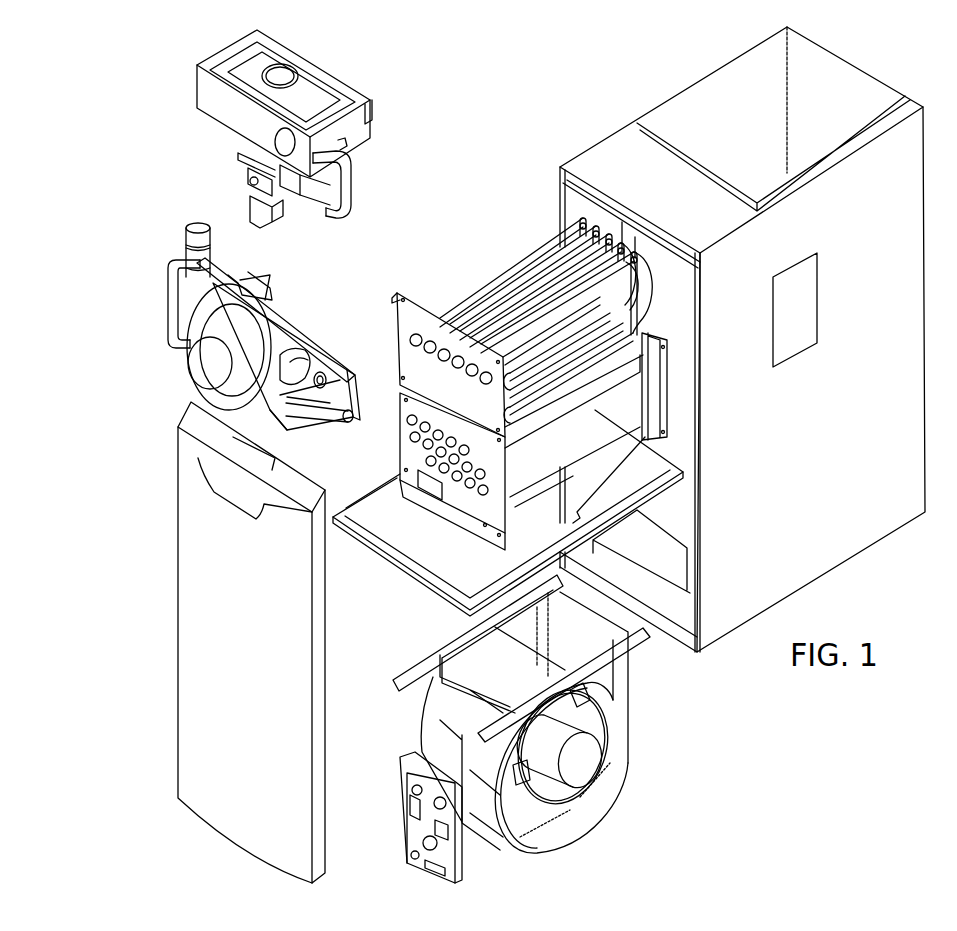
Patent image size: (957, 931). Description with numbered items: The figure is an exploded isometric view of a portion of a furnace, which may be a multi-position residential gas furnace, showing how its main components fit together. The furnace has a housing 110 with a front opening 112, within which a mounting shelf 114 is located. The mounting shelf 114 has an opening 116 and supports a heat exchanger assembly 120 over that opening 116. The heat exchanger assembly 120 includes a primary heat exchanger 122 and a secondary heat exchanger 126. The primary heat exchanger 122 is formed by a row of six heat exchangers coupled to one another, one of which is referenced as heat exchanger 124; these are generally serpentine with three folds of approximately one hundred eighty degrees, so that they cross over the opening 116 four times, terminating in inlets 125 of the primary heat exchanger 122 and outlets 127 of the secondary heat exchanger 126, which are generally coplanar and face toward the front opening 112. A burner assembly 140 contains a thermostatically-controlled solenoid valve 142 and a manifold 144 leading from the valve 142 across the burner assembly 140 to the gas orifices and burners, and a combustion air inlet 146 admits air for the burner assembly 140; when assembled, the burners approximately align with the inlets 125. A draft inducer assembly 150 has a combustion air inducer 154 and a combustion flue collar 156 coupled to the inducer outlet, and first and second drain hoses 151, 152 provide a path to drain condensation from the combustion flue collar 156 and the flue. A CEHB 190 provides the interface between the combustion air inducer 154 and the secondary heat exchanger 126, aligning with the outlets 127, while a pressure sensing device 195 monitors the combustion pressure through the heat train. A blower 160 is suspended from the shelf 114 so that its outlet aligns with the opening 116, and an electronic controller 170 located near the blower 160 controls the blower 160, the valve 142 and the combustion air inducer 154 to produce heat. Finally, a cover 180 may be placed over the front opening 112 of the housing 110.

The housing 110 is at (843, 446).
The front opening 112 is at (580, 207).
The mounting shelf 114 is at (400, 568).
The opening 116 is at (576, 496).
The heat exchanger assembly 120 is at (628, 397).
The primary heat exchanger 122 is at (522, 391).
The heat exchanger 124 is at (513, 260).
The inlets 125 is at (418, 307).
The secondary heat exchanger 126 is at (547, 480).
The outlets 127 is at (473, 483).
The burner assembly 140 is at (283, 103).
The thermostatically-controlled solenoid valve 142 is at (250, 177).
The manifold 144 is at (346, 194).
The combustion air inlet 146 is at (216, 64).
The draft inducer assembly 150 is at (247, 348).
The first drain hose 151 is at (168, 300).
The second drain hose 152 is at (318, 424).
The combustion air inducer 154 is at (208, 367).
The combustion flue collar 156 is at (184, 232).
The blower 160 is at (630, 716).
The electronic controller 170 is at (407, 842).
The cover 180 is at (259, 676).
The CEHB 190 is at (307, 343).
The pressure sensing device 195 is at (340, 368).